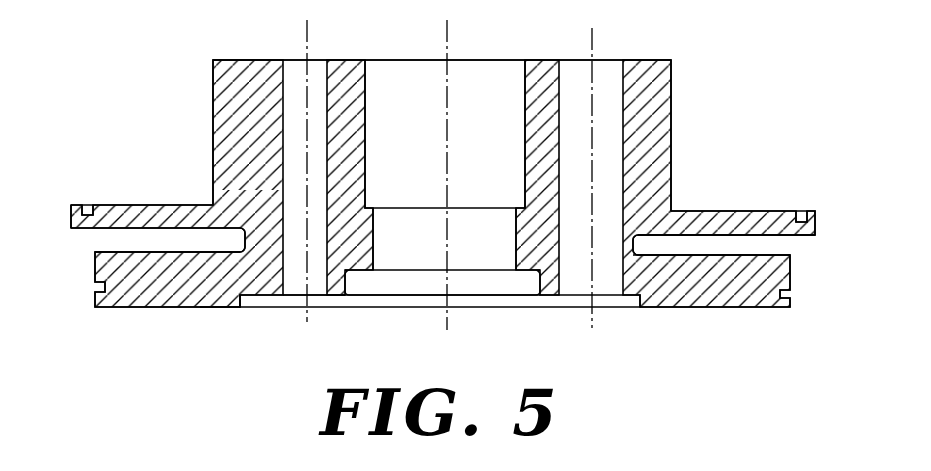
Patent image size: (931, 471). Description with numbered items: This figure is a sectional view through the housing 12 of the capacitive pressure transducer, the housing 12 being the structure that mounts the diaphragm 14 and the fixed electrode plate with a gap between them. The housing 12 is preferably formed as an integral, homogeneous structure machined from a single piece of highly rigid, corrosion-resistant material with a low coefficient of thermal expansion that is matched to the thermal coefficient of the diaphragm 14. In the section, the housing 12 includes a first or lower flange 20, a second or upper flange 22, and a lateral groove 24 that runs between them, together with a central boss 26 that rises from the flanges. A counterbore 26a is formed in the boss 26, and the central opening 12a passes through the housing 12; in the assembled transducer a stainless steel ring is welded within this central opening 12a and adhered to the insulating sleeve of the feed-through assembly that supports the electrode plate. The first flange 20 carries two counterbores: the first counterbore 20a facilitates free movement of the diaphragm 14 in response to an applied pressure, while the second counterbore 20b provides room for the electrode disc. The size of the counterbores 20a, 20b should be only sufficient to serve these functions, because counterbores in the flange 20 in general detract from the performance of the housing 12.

The housing 12 is at (703, 93).
The central opening 12a is at (487, 250).
The diaphragm 14 is at (608, 290).
The first flange 20 is at (150, 308).
The first counterbore 20a is at (268, 306).
The second counterbore 20b is at (364, 278).
The second flange 22 is at (157, 205).
The lateral groove 24 is at (92, 240).
The boss 26 is at (213, 98).
The counterbore 26a is at (478, 86).